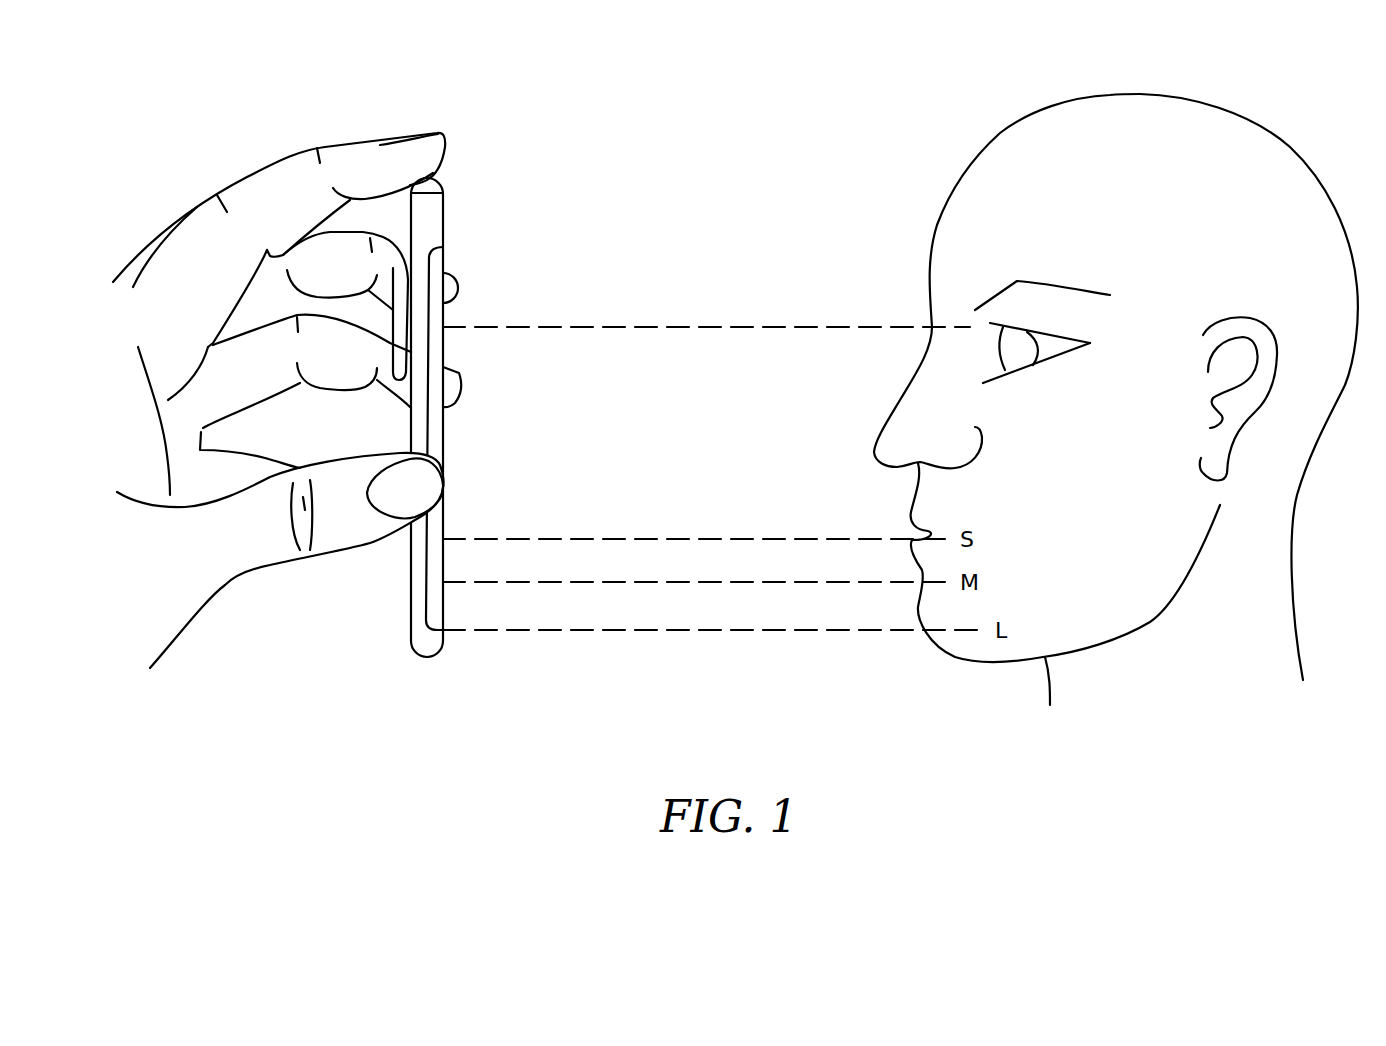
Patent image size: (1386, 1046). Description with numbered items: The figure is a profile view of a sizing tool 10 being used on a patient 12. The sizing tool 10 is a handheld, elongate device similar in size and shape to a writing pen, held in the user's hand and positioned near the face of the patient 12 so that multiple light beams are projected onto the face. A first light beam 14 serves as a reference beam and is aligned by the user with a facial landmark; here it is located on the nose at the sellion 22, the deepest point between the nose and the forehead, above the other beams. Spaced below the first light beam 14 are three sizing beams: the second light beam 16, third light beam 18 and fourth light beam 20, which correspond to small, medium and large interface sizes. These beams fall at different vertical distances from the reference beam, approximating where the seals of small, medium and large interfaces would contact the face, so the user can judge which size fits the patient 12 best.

The sizing tool 10 is at (482, 193).
The patient 12 is at (1257, 118).
The first light beam 14 is at (700, 323).
The second light beam 16 is at (697, 538).
The third light beam 18 is at (760, 582).
The fourth light beam 20 is at (763, 630).
The sellion 22 is at (932, 327).